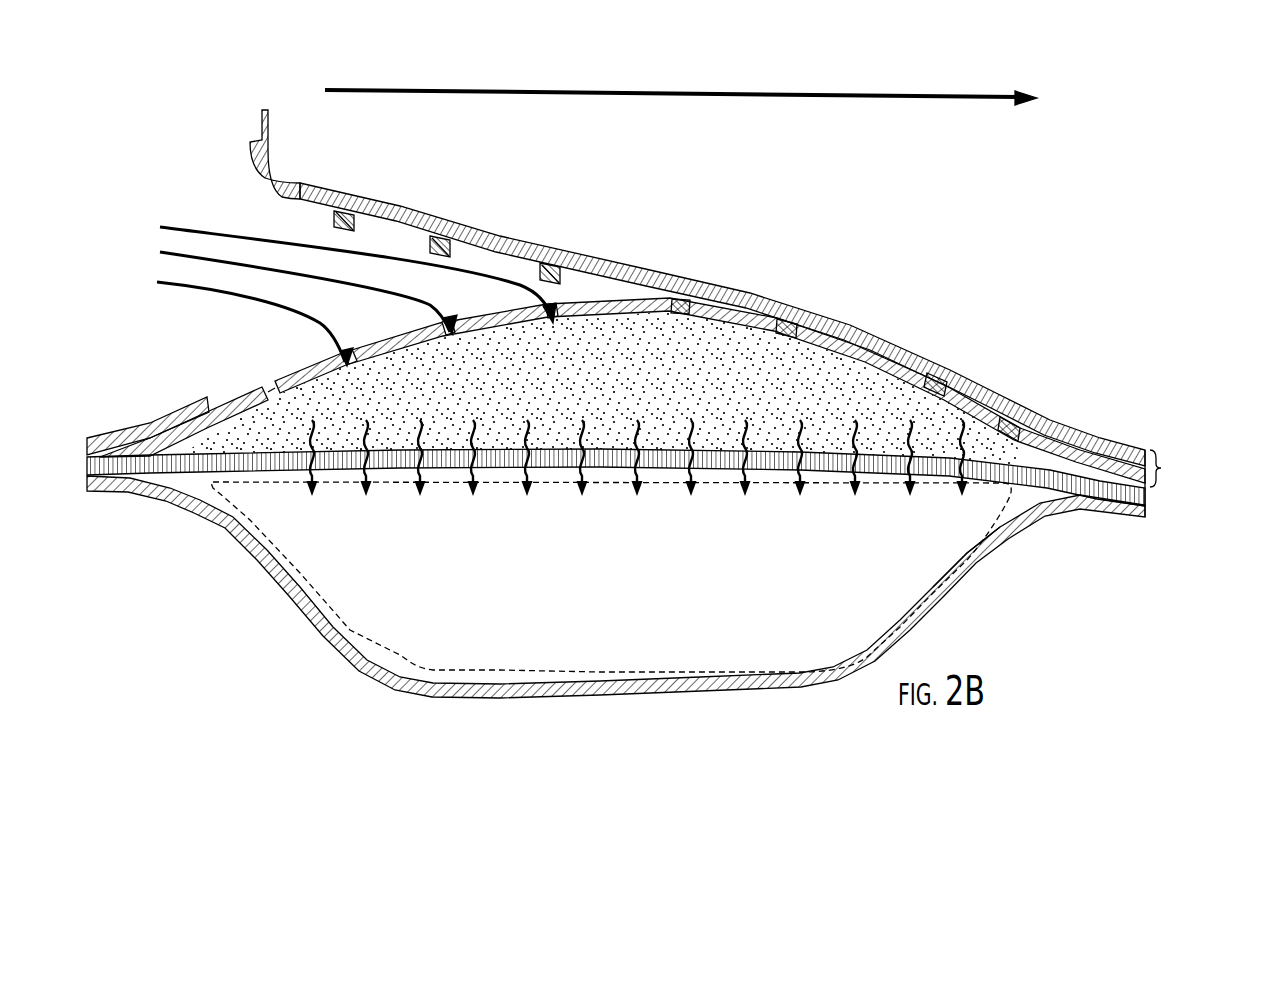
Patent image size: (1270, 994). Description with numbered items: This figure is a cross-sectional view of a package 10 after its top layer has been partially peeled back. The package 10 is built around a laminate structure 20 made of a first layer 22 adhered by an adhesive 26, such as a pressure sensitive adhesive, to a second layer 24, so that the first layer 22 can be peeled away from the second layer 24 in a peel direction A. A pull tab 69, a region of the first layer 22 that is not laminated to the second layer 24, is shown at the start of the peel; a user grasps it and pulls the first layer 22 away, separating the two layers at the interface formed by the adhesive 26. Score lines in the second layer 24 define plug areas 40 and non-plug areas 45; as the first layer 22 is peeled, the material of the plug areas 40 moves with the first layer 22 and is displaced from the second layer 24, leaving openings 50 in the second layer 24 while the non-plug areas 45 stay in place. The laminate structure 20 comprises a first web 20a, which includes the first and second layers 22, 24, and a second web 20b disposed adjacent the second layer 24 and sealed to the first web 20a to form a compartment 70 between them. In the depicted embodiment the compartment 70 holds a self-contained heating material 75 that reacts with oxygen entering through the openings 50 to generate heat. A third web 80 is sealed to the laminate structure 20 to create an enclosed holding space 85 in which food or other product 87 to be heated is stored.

The package 10 is at (1155, 290).
The laminate structure 20 is at (1206, 479).
The first web 20a is at (1172, 468).
The second web 20b is at (1138, 495).
The first layer 22 is at (657, 272).
The second layer 24 is at (88, 467).
The adhesive 26 is at (120, 442).
The plug areas 40 is at (548, 264).
The non-plug areas 45 is at (283, 389).
The openings 50 is at (342, 358).
The pull tab 69 is at (262, 126).
The compartment 70 is at (826, 367).
The self-contained heating material 75 is at (893, 407).
The third web 80 is at (1046, 513).
The enclosed holding space 85 is at (1003, 532).
The product 87 is at (947, 557).
The peel direction A is at (780, 93).